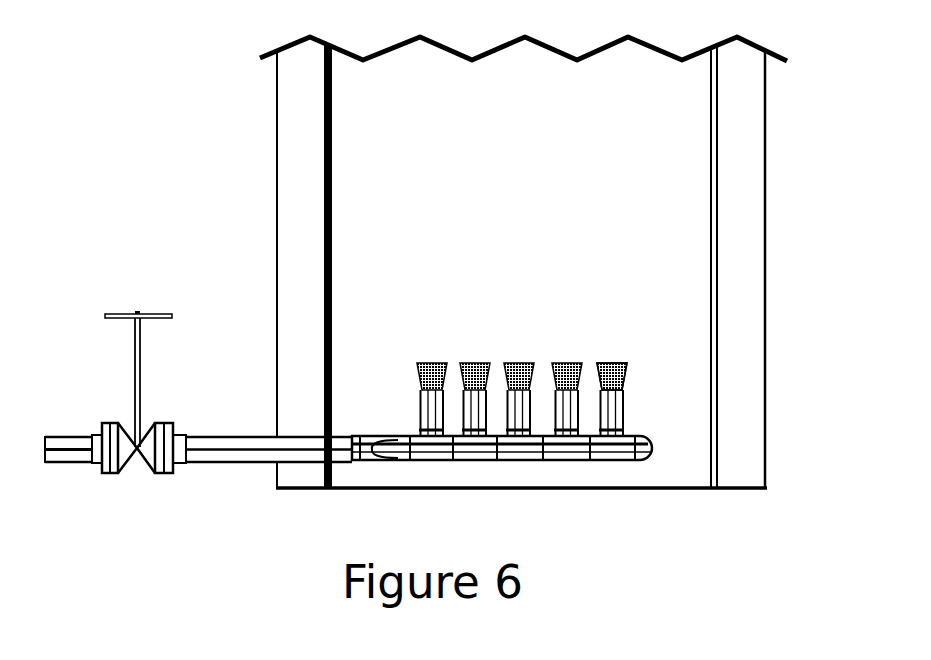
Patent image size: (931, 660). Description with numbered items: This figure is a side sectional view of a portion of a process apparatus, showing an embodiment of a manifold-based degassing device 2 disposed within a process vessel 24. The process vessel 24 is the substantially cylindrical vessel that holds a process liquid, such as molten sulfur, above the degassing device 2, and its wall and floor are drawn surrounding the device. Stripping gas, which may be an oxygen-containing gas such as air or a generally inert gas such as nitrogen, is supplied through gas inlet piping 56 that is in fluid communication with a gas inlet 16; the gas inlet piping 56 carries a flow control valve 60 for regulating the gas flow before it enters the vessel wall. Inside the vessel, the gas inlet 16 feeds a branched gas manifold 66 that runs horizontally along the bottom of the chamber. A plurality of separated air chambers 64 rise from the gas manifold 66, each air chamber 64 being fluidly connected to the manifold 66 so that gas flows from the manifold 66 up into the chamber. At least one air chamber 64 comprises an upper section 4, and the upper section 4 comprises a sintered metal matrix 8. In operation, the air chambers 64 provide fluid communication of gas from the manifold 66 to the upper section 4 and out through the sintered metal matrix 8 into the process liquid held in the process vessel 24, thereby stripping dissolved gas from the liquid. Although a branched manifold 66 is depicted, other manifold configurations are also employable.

The degassing device 2 is at (523, 296).
The upper section 4 is at (415, 385).
The sintered metal matrix 8 is at (625, 365).
The gas inlet 16 is at (276, 462).
The process vessel 24 is at (715, 257).
The gas inlet piping 56 is at (212, 437).
The flow control valve 60 is at (110, 423).
The air chamber 64 is at (415, 407).
The gas manifold 66 is at (395, 453).